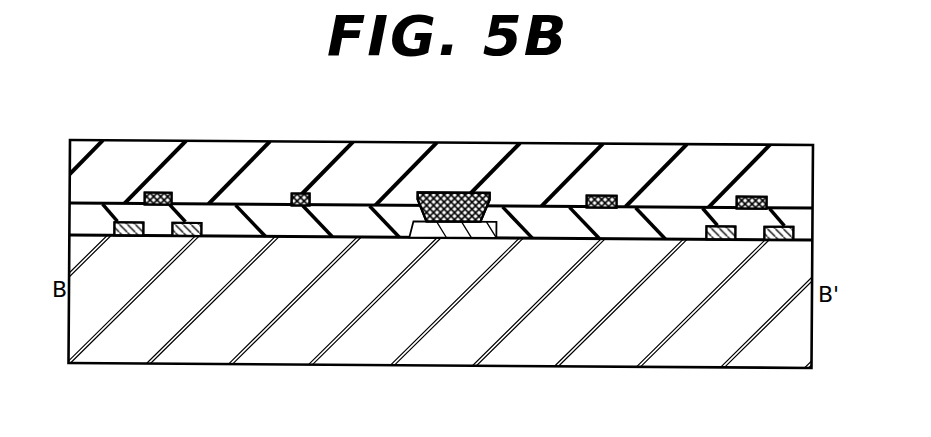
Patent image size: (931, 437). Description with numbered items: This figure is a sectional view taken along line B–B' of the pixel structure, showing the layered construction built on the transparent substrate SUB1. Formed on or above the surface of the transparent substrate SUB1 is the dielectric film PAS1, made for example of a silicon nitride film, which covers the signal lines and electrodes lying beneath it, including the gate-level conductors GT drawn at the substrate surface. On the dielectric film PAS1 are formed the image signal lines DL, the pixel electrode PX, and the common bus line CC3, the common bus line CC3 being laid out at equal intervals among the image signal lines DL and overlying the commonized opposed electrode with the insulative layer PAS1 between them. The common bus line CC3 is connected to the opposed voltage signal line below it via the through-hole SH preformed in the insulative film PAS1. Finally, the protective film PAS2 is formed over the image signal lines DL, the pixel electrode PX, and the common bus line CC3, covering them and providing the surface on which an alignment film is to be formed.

The common bus line CC3 is at (463, 189).
The protective film PAS2 is at (557, 160).
The dielectric film PAS1 is at (537, 232).
The image signal line DL is at (177, 186).
The pixel electrode PX is at (288, 186).
The gate electrode GT is at (186, 240).
The through-hole SH is at (455, 233).
The transparent substrate SUB1 is at (465, 301).